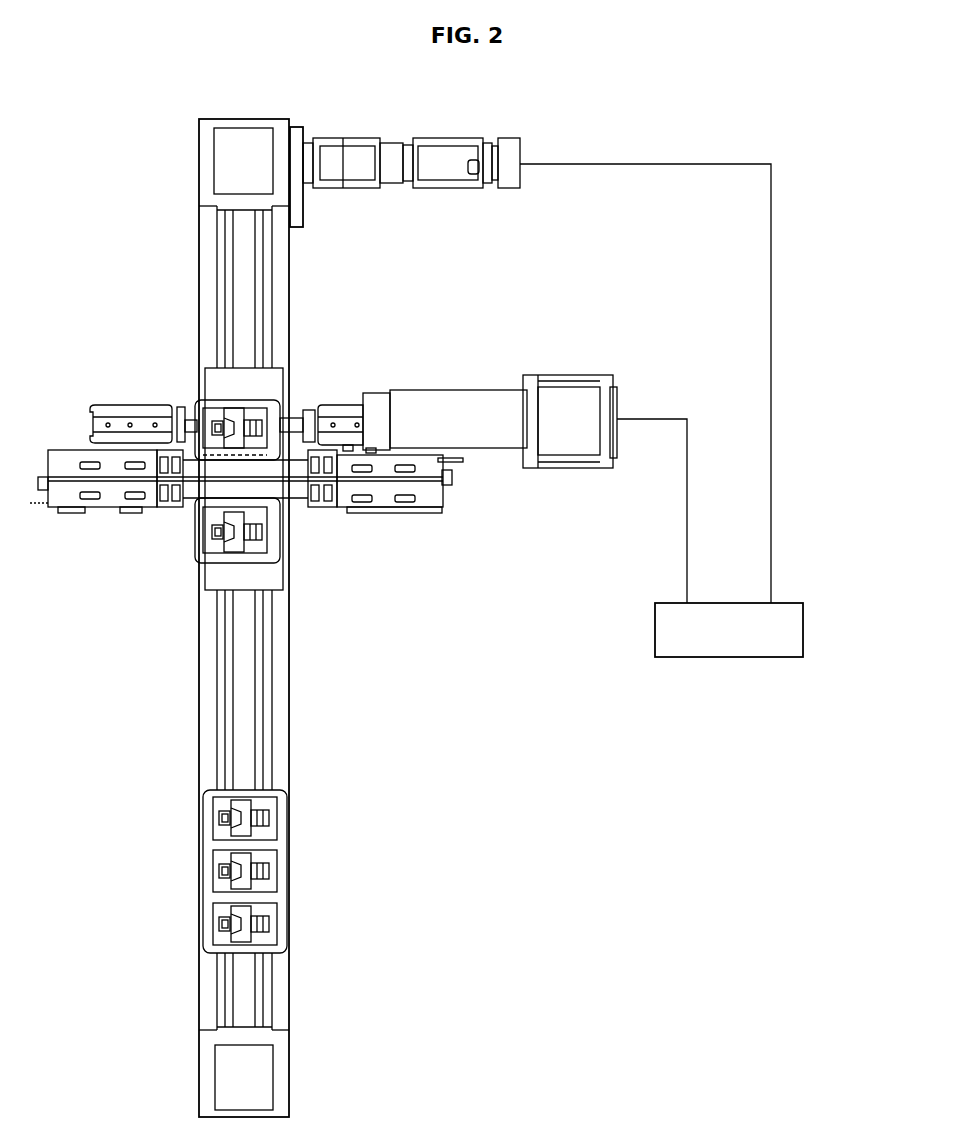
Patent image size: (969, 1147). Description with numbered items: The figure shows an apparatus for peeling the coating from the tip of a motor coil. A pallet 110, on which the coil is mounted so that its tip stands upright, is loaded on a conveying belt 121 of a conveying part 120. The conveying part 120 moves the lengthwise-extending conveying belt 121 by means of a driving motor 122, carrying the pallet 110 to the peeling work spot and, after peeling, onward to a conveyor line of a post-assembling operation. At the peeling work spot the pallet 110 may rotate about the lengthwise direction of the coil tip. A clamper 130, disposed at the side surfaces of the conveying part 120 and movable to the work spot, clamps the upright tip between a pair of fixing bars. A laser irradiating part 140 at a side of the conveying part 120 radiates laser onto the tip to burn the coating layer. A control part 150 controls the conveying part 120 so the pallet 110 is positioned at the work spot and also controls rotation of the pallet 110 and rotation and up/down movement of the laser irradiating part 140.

The pallet 110 is at (205, 391).
The conveying part 120 is at (298, 755).
The conveying belt 121 is at (198, 253).
The driving motor 122 is at (455, 136).
The clamper 130 is at (352, 395).
The laser irradiating part 140 is at (555, 370).
The control part 150 is at (826, 629).